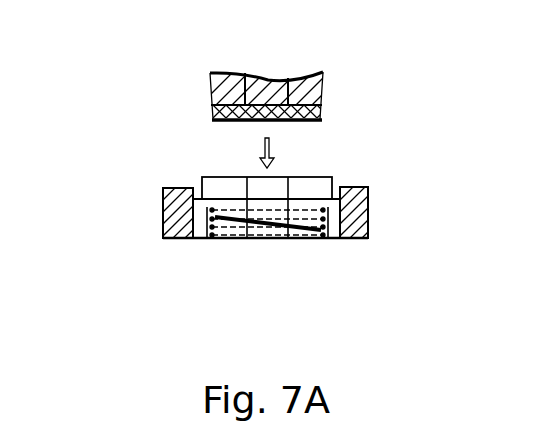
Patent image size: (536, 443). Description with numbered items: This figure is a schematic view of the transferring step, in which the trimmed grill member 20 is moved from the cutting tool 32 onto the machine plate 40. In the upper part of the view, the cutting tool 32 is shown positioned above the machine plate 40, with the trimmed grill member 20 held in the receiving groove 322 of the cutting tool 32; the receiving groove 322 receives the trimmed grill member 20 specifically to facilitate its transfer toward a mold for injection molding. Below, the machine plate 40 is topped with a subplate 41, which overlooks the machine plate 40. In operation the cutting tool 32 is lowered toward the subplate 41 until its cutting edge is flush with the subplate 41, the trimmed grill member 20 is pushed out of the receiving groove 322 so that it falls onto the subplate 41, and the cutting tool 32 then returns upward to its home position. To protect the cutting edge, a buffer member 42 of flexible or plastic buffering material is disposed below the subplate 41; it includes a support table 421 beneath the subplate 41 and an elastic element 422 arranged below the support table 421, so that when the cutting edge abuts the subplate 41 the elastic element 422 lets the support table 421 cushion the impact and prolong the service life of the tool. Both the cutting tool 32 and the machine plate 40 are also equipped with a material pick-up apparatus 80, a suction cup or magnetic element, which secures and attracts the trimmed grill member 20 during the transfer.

The trimmed grill member 20 is at (273, 93).
The cutting tool 32 is at (209, 92).
The receiving groove 322 is at (322, 120).
The material pick-up apparatus 80 is at (246, 88).
The machine plate 40 is at (231, 233).
The subplate 41 is at (213, 185).
The buffer member 42 is at (257, 274).
The support table 421 is at (343, 251).
The elastic element 422 is at (210, 239).